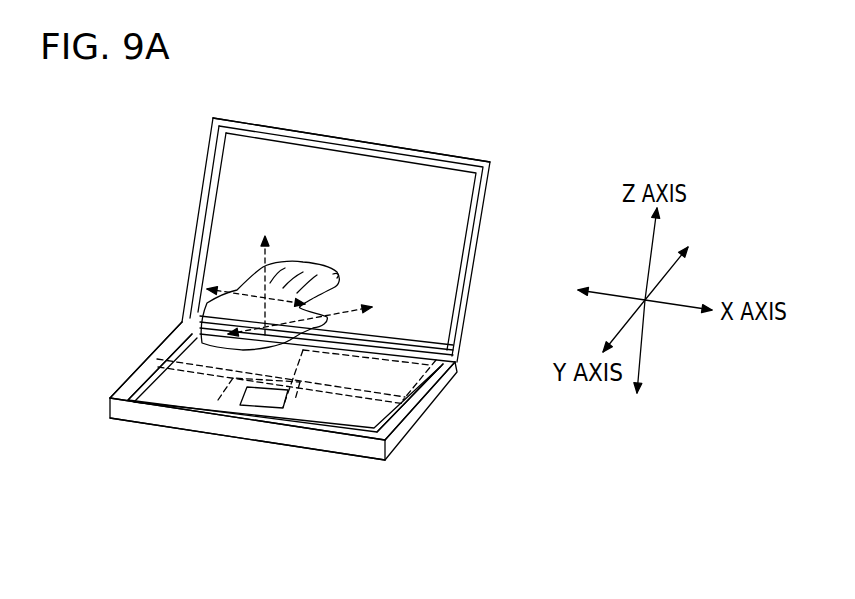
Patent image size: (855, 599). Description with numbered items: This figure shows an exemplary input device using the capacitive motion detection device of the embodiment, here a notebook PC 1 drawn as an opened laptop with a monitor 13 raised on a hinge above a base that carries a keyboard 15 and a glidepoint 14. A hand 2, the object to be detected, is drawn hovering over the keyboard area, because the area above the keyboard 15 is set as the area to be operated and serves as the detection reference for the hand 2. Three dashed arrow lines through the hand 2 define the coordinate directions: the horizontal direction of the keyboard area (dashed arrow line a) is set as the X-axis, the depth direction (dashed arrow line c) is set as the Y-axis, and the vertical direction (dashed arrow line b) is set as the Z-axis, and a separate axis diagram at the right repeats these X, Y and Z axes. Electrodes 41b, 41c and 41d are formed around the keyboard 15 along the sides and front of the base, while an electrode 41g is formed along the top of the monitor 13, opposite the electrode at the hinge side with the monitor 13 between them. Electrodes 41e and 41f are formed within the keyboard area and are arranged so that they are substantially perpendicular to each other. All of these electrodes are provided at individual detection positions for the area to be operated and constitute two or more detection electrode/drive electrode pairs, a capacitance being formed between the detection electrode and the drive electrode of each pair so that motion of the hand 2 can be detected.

The notebook PC 1 is at (331, 293).
The hand 2 is at (186, 309).
The monitor 13 is at (336, 211).
The glidepoint 14 is at (233, 450).
The keyboard 15 is at (398, 378).
The electrode 41b is at (143, 360).
The electrode 41c is at (400, 417).
The electrode 41d is at (342, 430).
The electrode 41e is at (200, 366).
The electrode 41f is at (385, 348).
The electrode 41g is at (267, 132).